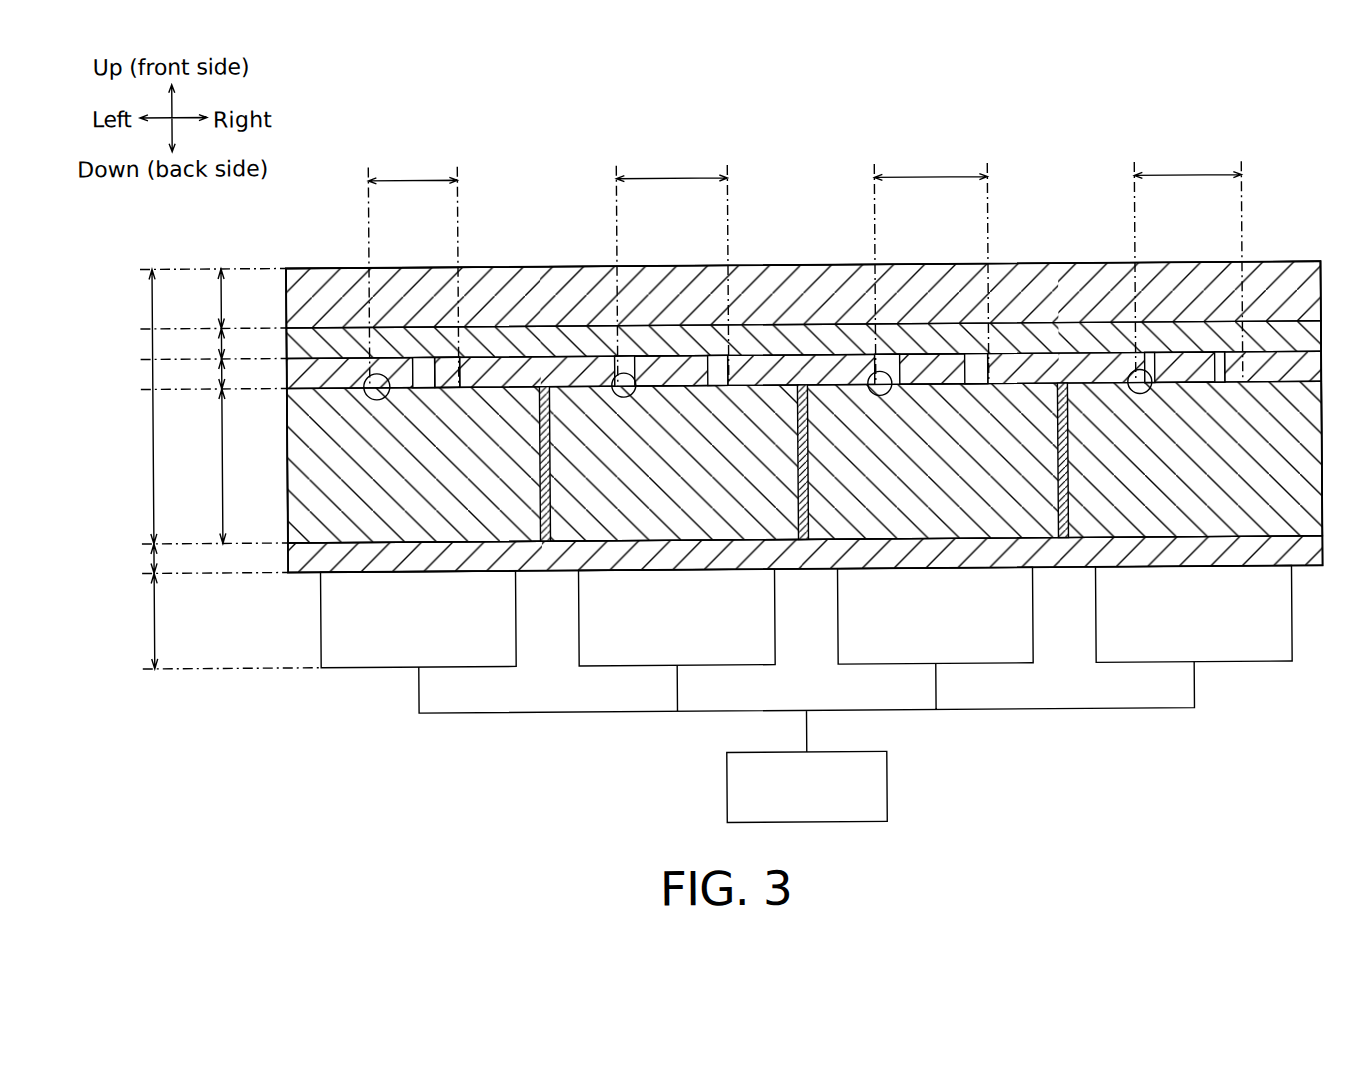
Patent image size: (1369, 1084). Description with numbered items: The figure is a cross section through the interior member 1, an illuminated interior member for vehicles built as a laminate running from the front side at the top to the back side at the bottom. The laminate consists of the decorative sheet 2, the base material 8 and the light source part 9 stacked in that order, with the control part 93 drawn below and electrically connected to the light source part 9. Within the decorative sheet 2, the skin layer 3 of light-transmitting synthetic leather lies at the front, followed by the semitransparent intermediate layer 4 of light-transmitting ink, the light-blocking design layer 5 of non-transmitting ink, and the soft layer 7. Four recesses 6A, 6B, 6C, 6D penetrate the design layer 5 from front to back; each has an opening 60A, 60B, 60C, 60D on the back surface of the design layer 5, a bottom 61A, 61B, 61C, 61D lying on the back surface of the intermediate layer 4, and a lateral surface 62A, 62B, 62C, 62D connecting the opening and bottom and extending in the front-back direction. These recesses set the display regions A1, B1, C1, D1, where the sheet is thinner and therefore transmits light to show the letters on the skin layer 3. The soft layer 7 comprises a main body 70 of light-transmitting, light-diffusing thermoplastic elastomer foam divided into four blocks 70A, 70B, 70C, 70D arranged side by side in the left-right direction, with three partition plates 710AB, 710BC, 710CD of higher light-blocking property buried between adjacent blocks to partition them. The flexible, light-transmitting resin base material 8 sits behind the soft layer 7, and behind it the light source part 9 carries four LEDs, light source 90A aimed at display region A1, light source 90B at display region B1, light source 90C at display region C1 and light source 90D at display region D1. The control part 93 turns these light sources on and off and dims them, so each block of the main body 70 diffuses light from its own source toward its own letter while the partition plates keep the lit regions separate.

The interior member 1 is at (1240, 111).
The decorative sheet 2 is at (152, 409).
The skin layer 3 is at (221, 311).
The intermediate layer 4 is at (221, 343).
The design layer 5 is at (221, 372).
The soft layer 7 is at (221, 465).
The base material 8 is at (152, 557).
The light source part 9 is at (152, 617).
The main body 70 is at (780, 499).
The block 70A is at (356, 533).
The block 70B is at (616, 535).
The block 70C is at (875, 536).
The block 70D is at (1135, 538).
The recess 6A is at (414, 342).
The recess 6B is at (648, 342).
The recess 6C is at (908, 341).
The recess 6D is at (1160, 339).
The opening 60A is at (424, 393).
The opening 60B is at (725, 393).
The opening 60C is at (984, 393).
The opening 60D is at (1235, 393).
The bottom 61A is at (436, 392).
The bottom 61B is at (711, 392).
The bottom 61C is at (967, 392).
The bottom 61D is at (1219, 392).
The lateral surface 62A is at (365, 398).
The lateral surface 62B is at (612, 398).
The lateral surface 62C is at (870, 399).
The lateral surface 62D is at (1129, 399).
The partition plate 710AB is at (545, 391).
The partition plate 710BC is at (803, 391).
The partition plate 710CD is at (1062, 391).
The light source 90A is at (373, 661).
The light source 90B is at (631, 663).
The light source 90C is at (891, 665).
The light source 90D is at (1148, 667).
The control part 93 is at (884, 775).
The display region A1 is at (415, 181).
The display region B1 is at (673, 180).
The display region C1 is at (933, 180).
The display region D1 is at (1189, 180).